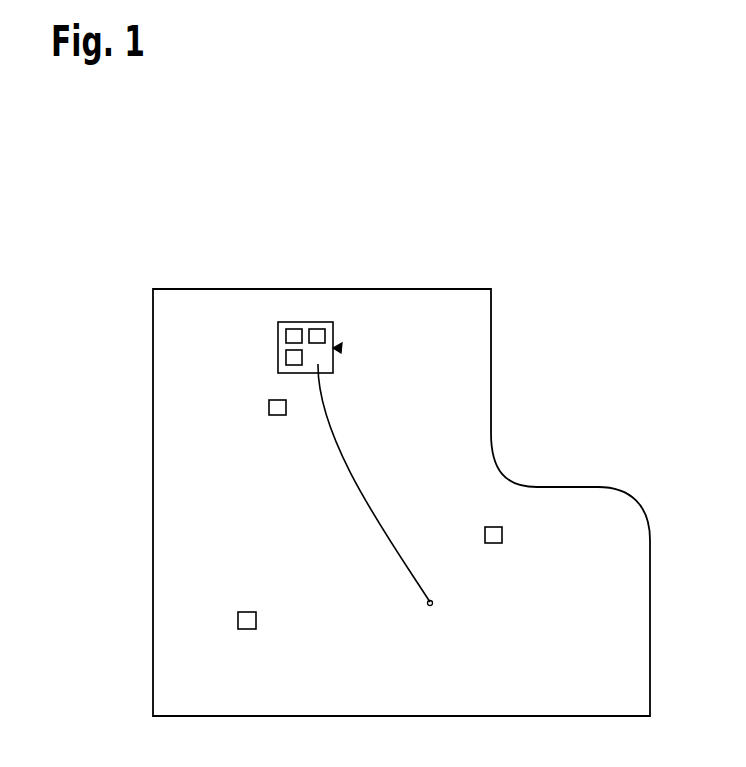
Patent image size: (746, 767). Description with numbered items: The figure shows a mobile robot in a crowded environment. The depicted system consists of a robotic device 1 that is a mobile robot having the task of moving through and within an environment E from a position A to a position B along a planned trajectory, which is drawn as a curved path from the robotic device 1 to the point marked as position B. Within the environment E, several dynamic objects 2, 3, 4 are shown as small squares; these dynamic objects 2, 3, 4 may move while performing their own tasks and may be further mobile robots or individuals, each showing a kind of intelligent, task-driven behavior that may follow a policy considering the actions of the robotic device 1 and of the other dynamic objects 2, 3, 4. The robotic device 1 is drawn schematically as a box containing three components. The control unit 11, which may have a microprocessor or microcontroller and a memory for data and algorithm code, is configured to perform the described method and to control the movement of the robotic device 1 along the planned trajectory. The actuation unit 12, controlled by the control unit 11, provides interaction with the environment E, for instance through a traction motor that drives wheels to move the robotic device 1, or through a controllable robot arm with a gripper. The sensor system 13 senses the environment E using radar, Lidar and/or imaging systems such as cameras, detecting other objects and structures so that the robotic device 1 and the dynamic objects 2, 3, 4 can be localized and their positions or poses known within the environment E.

The robotic device 1 is at (305, 322).
The control unit 11 is at (290, 335).
The actuation unit 12 is at (291, 356).
The sensor system 13 is at (333, 334).
The dynamic object 2 is at (257, 620).
The dynamic object 3 is at (503, 535).
The dynamic object 4 is at (269, 408).
The position A is at (340, 349).
The position B is at (433, 603).
The environment E is at (491, 361).